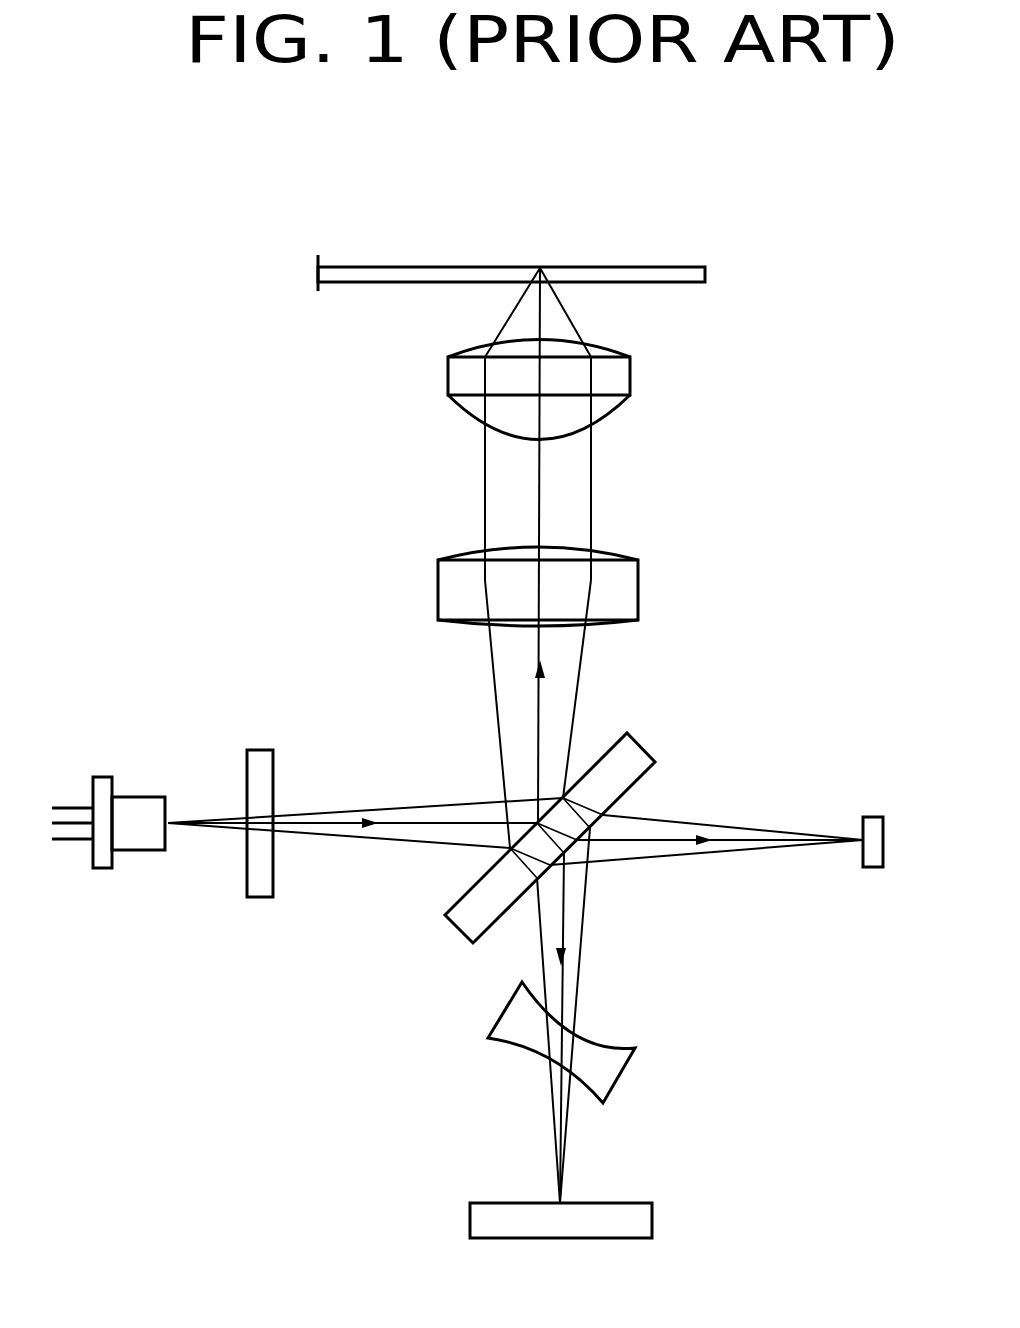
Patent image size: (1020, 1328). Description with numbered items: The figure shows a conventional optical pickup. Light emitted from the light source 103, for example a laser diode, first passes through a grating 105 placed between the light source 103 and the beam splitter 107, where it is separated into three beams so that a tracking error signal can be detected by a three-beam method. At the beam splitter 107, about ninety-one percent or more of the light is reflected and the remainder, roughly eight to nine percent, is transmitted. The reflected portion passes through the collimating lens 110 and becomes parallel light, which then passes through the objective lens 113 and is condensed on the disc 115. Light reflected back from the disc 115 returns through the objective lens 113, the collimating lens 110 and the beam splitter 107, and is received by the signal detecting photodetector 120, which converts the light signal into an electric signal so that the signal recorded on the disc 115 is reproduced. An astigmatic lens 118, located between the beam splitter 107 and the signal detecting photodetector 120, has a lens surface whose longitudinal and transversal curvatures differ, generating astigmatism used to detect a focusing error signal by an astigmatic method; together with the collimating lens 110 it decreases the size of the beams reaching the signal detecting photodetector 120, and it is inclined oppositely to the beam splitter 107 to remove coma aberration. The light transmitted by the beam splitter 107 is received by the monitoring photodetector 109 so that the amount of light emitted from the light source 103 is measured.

The light source 103 is at (138, 797).
The grating 105 is at (264, 750).
The beam splitter 107 is at (647, 747).
The monitoring photodetector 109 is at (873, 815).
The collimating lens 110 is at (638, 590).
The objective lens 113 is at (630, 378).
The disc 115 is at (705, 275).
The astigmatic lens 118 is at (598, 1052).
The signal detecting photodetector 120 is at (652, 1222).